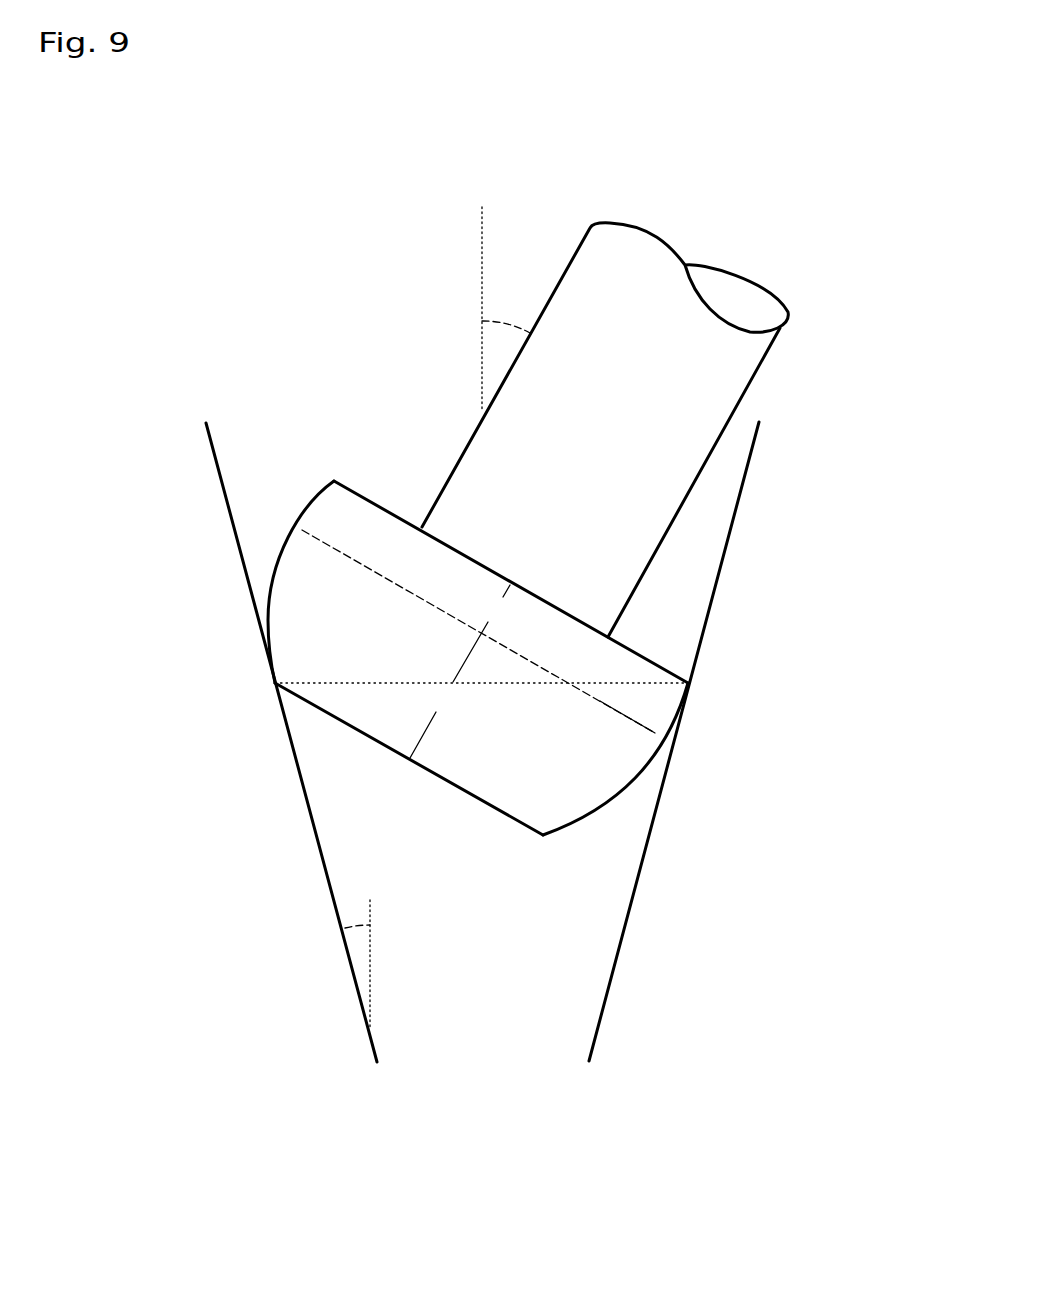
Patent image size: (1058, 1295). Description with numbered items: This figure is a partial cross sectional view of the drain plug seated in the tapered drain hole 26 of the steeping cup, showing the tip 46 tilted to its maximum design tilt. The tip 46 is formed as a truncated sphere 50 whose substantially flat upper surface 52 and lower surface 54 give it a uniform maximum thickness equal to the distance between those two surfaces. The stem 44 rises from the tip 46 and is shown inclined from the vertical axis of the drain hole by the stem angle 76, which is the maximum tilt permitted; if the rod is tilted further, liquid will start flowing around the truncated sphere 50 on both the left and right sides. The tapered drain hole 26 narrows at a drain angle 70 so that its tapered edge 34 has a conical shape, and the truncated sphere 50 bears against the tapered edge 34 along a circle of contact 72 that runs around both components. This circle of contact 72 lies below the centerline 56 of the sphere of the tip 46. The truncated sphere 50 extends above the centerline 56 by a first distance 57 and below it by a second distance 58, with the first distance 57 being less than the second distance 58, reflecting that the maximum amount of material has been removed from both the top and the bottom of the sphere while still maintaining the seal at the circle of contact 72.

The tapered drain hole 26 is at (483, 987).
The tapered edge 34 is at (630, 922).
The stem 44 is at (663, 350).
The tip 46 is at (464, 638).
The truncated sphere 50 is at (282, 555).
The upper surface 52 is at (372, 500).
The lower surface 54 is at (492, 808).
The centerline 56 is at (653, 732).
The first distance 57 is at (482, 633).
The second distance 58 is at (433, 722).
The drain angle 70 is at (356, 955).
The circle of contact 72 is at (275, 683).
The stem angle 76 is at (506, 308).